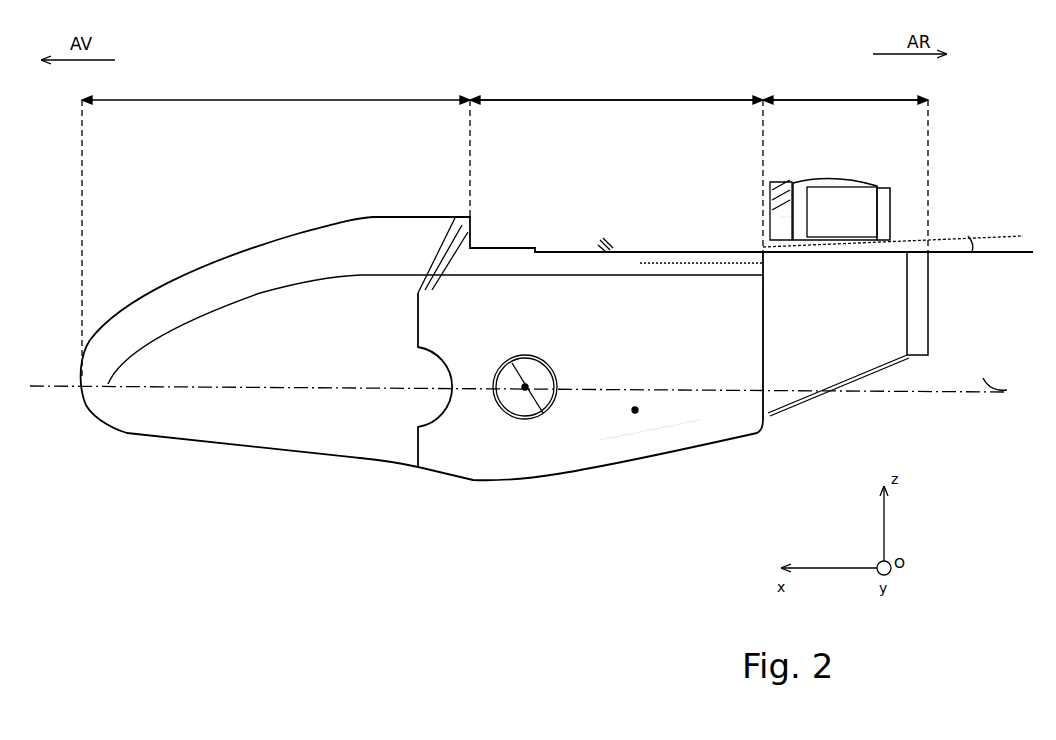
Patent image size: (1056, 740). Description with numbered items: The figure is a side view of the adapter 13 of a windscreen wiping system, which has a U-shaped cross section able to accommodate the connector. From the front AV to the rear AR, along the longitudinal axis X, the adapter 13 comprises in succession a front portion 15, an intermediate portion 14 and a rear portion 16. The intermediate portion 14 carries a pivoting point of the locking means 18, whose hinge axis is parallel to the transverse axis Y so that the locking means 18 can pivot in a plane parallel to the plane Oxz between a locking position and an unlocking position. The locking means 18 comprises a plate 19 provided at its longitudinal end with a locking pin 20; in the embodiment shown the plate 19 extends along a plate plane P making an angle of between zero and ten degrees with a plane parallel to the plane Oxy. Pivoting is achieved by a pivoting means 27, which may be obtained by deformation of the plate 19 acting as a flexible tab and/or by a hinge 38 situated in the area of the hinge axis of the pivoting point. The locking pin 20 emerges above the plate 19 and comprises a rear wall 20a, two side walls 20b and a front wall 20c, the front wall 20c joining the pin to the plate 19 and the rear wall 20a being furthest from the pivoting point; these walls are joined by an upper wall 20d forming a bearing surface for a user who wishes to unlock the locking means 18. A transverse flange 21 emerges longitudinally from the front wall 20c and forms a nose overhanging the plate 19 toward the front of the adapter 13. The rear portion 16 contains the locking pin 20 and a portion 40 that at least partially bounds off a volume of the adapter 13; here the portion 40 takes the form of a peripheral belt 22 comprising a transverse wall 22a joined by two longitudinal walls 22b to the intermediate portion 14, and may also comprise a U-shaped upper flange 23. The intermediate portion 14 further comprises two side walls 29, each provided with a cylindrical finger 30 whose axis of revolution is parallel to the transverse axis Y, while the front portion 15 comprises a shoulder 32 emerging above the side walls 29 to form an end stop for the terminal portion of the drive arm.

The adapter 13 is at (447, 541).
The intermediate portion 14 is at (616, 85).
The front portion 15 is at (505, 225).
The rear portion 16 is at (845, 86).
The locking means 18 is at (735, 203).
The plate 19 is at (683, 227).
The locking pin 20 is at (843, 165).
The rear wall 20a is at (893, 208).
The side walls 20b is at (861, 223).
The front wall 20c is at (780, 217).
The upper wall 20d is at (849, 180).
The transverse flange 21 is at (787, 182).
The peripheral belt 22 is at (728, 349).
The transverse wall 22a is at (930, 279).
The longitudinal walls 22b is at (849, 330).
The upper flange 23 is at (917, 253).
The pivoting means 27 is at (597, 244).
The side walls 29 is at (636, 411).
The finger 30 is at (543, 413).
The shoulder 32 is at (438, 250).
The hinge 38 is at (598, 249).
The portion 40 is at (943, 298).